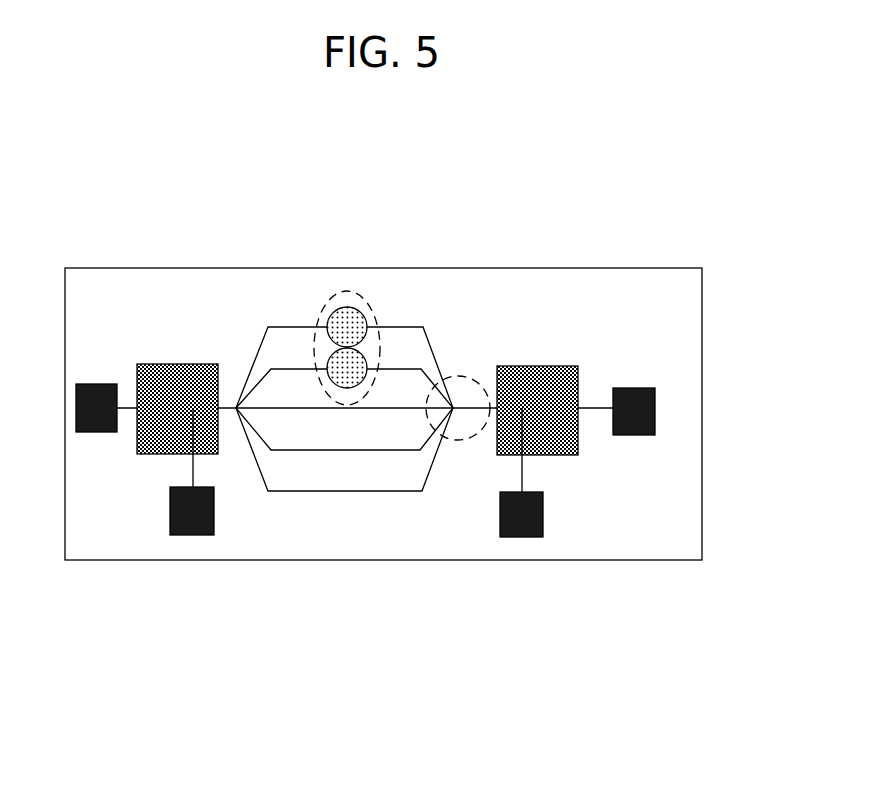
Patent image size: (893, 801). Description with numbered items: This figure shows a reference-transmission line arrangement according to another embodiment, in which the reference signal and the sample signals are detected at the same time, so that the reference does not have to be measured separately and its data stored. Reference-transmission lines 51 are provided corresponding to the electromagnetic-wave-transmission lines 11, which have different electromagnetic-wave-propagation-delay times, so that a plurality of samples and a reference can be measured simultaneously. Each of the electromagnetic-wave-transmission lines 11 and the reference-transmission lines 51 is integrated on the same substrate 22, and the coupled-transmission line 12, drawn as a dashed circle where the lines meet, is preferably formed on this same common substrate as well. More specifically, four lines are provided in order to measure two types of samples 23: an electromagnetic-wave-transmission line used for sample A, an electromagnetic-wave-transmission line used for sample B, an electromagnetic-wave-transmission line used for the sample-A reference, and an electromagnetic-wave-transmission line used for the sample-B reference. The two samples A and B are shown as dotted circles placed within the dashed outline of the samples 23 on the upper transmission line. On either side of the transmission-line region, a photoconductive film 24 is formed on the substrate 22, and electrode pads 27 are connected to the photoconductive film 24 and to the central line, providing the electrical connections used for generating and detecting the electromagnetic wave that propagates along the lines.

The substrate 22 is at (102, 542).
The electromagnetic-wave-transmission line 11 is at (403, 370).
The reference-transmission line 51 is at (310, 450).
The sample 23 is at (296, 290).
The sample A is at (340, 362).
The sample B is at (337, 318).
The coupled-transmission line 12 is at (452, 445).
The photoconductive film 24 is at (578, 377).
The electrode pad 27 is at (655, 415).